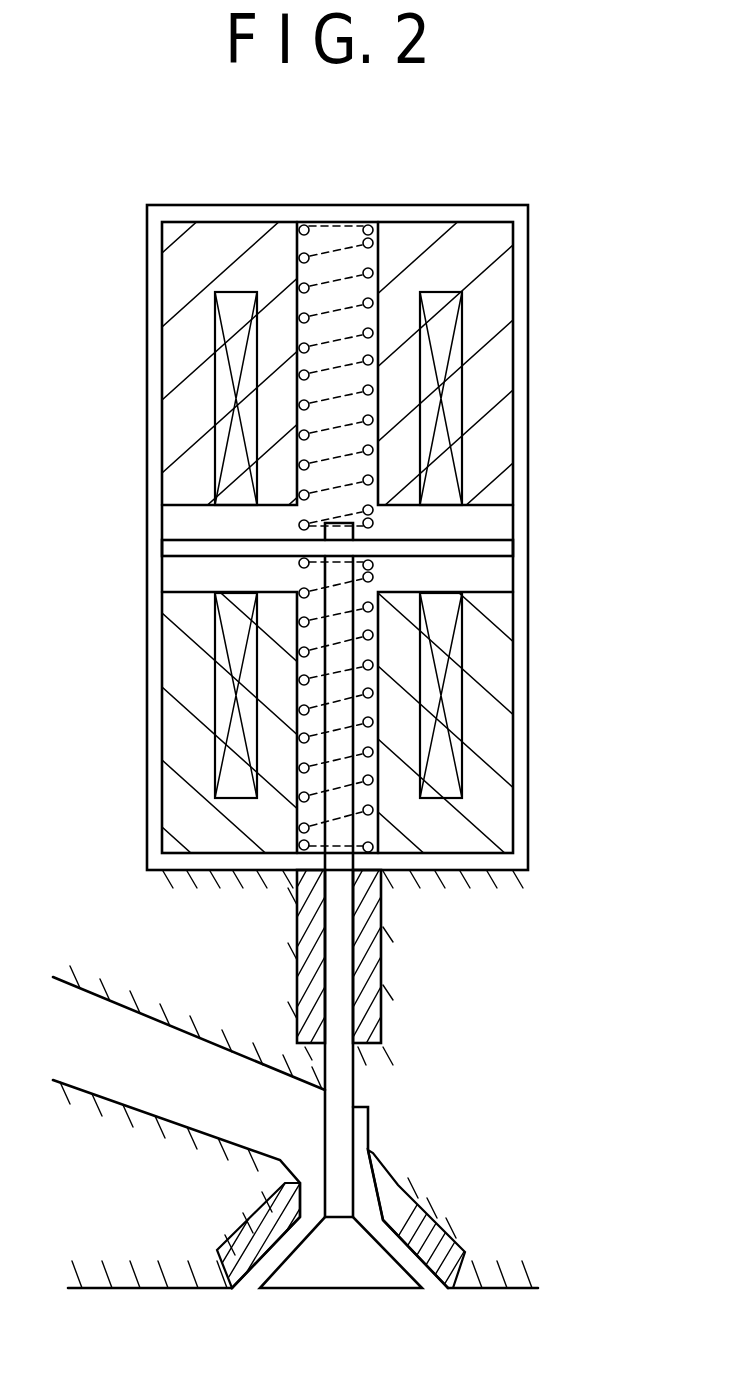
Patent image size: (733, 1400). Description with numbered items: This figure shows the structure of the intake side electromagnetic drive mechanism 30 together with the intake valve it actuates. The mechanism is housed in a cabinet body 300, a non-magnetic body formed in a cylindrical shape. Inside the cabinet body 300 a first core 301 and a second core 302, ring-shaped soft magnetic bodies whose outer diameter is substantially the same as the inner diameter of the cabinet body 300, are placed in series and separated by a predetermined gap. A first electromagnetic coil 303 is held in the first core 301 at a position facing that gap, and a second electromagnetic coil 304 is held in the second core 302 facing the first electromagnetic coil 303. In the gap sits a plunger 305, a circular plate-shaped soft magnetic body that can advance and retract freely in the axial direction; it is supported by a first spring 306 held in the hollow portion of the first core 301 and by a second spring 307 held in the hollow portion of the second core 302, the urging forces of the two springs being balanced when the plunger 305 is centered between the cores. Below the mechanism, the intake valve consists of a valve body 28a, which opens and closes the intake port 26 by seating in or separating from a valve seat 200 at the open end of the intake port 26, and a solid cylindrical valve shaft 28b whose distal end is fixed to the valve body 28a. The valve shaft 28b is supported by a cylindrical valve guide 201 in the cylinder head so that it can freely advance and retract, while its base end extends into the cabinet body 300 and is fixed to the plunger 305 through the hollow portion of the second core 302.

The intake side electromagnetic drive mechanism 30 is at (566, 278).
The cabinet body 300 is at (149, 237).
The first core 301 is at (172, 298).
The second core 302 is at (172, 792).
The first electromagnetic coil 303 is at (233, 475).
The second electromagnetic coil 304 is at (233, 617).
The plunger 305 is at (483, 551).
The first spring 306 is at (320, 252).
The second spring 307 is at (387, 812).
The valve guide 201 is at (383, 970).
The intake port 26 is at (220, 1053).
The valve body 28a is at (380, 1290).
The valve shaft 28b is at (353, 1087).
The valve seat 200 is at (433, 1233).